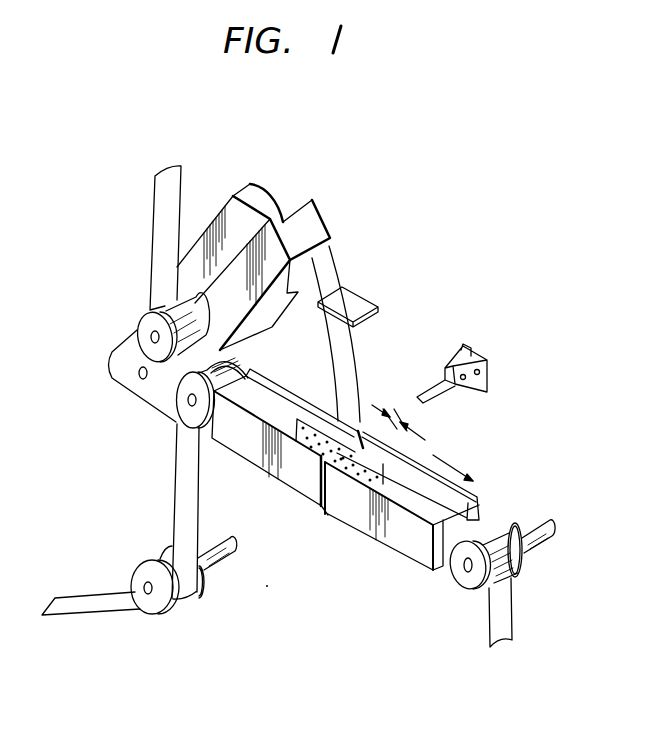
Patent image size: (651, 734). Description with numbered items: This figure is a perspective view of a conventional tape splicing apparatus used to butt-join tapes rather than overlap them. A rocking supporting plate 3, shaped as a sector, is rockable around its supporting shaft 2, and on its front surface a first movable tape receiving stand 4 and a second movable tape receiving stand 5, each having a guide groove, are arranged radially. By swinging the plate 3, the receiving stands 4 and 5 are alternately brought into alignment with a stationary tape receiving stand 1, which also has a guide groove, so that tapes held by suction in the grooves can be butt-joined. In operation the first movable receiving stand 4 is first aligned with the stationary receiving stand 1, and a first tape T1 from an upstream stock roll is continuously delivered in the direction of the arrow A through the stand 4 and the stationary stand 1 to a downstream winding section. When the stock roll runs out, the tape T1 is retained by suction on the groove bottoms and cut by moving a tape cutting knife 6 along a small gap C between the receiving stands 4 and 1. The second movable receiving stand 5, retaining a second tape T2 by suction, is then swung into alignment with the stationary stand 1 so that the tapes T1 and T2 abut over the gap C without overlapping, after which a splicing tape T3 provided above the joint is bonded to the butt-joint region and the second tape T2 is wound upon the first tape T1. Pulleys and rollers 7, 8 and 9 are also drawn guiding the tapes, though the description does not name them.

The stationary tape receiving stand 1 is at (352, 510).
The supporting shaft 2 is at (138, 370).
The rocking supporting plate 3 is at (322, 357).
The first movable tape receiving stand 4 is at (248, 447).
The second movable tape receiving stand 5 is at (313, 222).
The tape cutting knife 6 is at (440, 397).
The pulley 7 is at (182, 396).
The pulley 8 is at (143, 322).
The pulley 9 is at (468, 580).
The first tape T1 is at (77, 607).
The second tape T2 is at (162, 200).
The splicing tape T3 is at (353, 298).
The small gap C is at (398, 418).
The arrow A is at (453, 464).